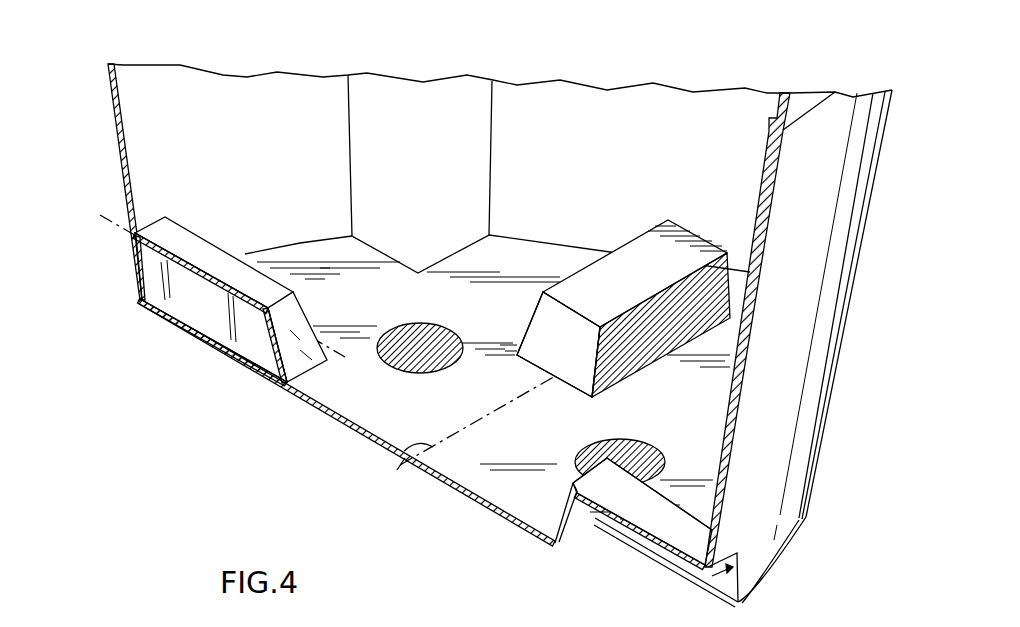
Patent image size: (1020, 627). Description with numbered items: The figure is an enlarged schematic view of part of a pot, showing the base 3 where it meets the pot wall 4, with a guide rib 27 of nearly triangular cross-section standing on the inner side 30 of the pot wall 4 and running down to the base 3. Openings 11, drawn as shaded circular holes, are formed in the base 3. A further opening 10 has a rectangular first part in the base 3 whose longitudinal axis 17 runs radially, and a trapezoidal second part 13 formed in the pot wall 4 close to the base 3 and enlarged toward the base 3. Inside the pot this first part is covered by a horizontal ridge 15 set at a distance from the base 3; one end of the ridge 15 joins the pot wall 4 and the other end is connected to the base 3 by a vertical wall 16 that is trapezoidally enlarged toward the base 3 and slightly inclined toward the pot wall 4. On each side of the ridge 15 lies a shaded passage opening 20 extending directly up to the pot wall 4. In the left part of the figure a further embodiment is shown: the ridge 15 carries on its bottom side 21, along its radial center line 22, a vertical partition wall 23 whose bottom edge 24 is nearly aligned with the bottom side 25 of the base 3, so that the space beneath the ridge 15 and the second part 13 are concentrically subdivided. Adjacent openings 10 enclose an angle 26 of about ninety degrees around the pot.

The base 3 is at (512, 448).
The pot wall 4 is at (600, 164).
The opening 10 is at (707, 300).
The opening 11 is at (405, 328).
The second part 13 is at (745, 590).
The ridge 15 is at (422, 386).
The vertical wall 16 is at (533, 322).
The longitudinal axis 17 is at (516, 399).
The passage opening 20 is at (640, 355).
The bottom side 21 is at (160, 257).
The radial center line 22 is at (342, 355).
The partition wall 23 is at (180, 300).
The bottom edge 24 is at (237, 357).
The bottom side 25 is at (327, 412).
The angle 26 is at (403, 457).
The guide rib 27 is at (446, 143).
The inner side 30 is at (246, 86).